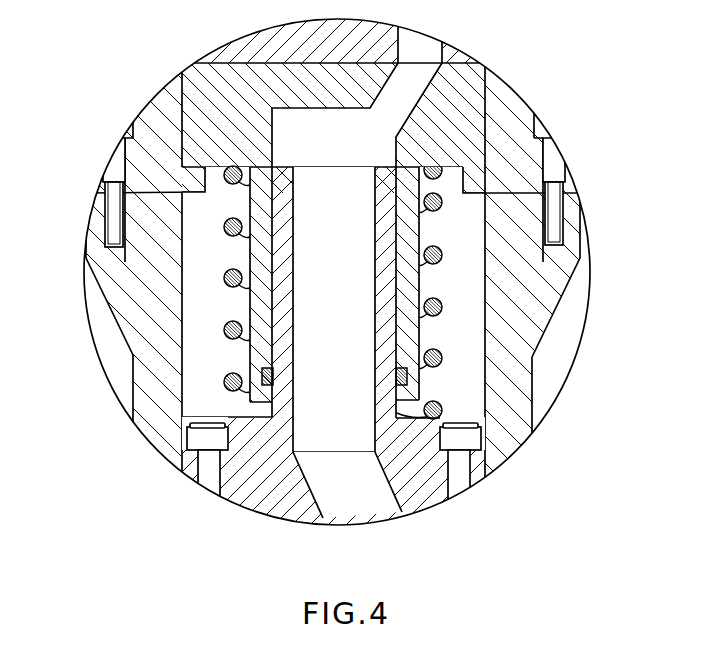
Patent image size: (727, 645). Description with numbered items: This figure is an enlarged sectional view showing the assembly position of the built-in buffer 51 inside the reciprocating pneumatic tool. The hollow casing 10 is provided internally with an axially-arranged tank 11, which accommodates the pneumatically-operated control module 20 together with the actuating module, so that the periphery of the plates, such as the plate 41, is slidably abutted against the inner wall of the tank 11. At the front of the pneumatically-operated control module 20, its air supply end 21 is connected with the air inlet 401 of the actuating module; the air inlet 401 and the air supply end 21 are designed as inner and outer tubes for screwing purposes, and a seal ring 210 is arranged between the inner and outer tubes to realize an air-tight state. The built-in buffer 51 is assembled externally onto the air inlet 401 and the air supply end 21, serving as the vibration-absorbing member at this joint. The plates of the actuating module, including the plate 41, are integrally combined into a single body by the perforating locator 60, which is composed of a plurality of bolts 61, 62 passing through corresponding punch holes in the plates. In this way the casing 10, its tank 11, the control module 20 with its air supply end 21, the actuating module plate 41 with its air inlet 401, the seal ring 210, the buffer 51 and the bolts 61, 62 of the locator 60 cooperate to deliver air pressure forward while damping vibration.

The casing 10 is at (538, 409).
The tank 11 is at (608, 355).
The pneumatically-operated control module 20 is at (220, 105).
The air supply end 21 is at (388, 275).
The plate 41 is at (422, 500).
The air inlet 401 is at (418, 292).
The built-in buffer 51 is at (228, 277).
The seal ring 210 is at (262, 375).
The perforating locator 60 is at (271, 485).
The bolt 61 is at (203, 465).
The bolt 62 is at (452, 470).